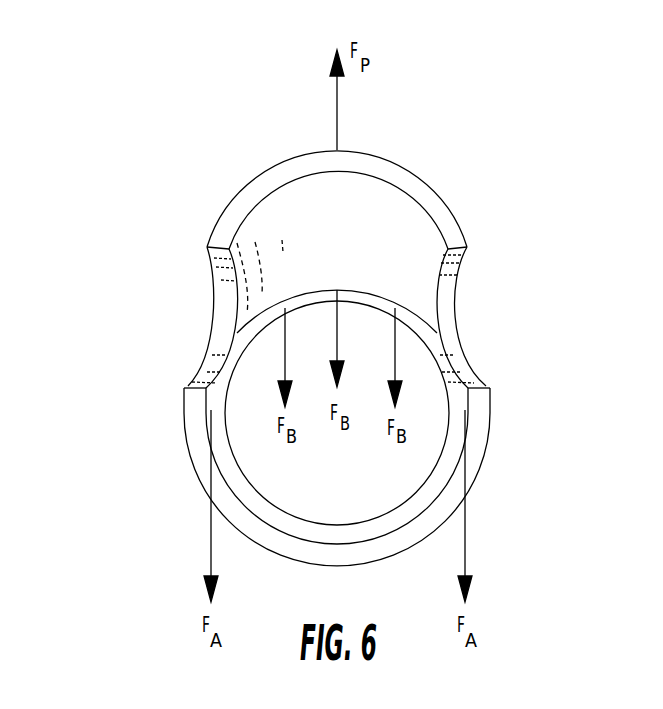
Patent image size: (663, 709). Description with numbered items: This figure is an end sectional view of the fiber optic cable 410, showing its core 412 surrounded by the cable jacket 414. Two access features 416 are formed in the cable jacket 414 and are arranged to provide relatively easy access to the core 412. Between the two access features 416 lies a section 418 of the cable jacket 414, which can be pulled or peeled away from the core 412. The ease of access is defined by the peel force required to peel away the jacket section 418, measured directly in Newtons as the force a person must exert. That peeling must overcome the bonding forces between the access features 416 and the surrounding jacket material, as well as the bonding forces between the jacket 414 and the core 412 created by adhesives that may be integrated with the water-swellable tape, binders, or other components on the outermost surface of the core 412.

The cable 410 is at (301, 367).
The core 412 is at (354, 482).
The cable jacket 414 is at (355, 372).
The access features 416 is at (447, 312).
The section of the cable jacket 418 is at (377, 167).